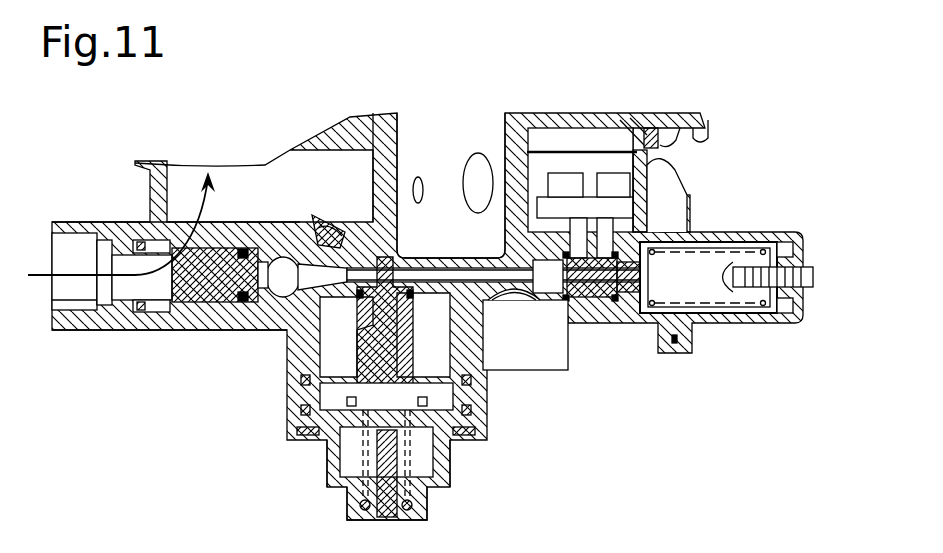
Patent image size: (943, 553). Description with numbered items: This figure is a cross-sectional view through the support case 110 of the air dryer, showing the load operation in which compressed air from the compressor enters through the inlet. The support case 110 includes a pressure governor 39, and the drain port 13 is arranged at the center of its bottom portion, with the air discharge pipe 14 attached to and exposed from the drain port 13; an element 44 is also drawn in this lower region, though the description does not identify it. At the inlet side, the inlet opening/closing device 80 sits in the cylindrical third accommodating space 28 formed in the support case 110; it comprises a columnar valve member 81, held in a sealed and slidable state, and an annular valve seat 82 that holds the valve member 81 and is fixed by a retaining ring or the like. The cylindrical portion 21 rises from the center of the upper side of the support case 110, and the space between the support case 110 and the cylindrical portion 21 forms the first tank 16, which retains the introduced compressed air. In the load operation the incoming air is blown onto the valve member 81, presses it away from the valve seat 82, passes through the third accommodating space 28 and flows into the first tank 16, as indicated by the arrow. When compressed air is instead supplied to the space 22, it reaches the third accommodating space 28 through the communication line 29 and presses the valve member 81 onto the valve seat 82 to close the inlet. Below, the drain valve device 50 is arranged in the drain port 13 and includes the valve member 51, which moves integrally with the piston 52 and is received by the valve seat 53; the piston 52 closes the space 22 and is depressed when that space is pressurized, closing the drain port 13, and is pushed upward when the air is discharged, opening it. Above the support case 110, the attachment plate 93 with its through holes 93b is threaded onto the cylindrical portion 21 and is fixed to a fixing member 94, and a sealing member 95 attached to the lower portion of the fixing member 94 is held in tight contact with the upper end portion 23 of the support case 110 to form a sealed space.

The drain port 13 is at (453, 440).
The air discharge pipe 14 is at (425, 492).
The first tank 16 is at (306, 201).
The cylindrical portion 21 is at (372, 188).
The space 22 is at (413, 272).
The upper end portion 23 is at (680, 205).
The third accommodating space 28 is at (188, 302).
The communication line 29 is at (472, 272).
The pressure governor 39 is at (812, 192).
The valve stem 44 is at (333, 470).
The drain valve device 50 is at (400, 449).
The valve member 51 is at (333, 427).
The piston 52 is at (372, 330).
The valve seat 53 is at (335, 400).
The inlet opening/closing device 80 is at (164, 270).
The valve member 81 is at (240, 302).
The valve seat 82 is at (140, 313).
The attachment plate 93 is at (712, 120).
The through holes 93b is at (582, 152).
The fixing member 94 is at (673, 143).
The sealing member 95 is at (668, 160).
The support case 110 is at (567, 360).